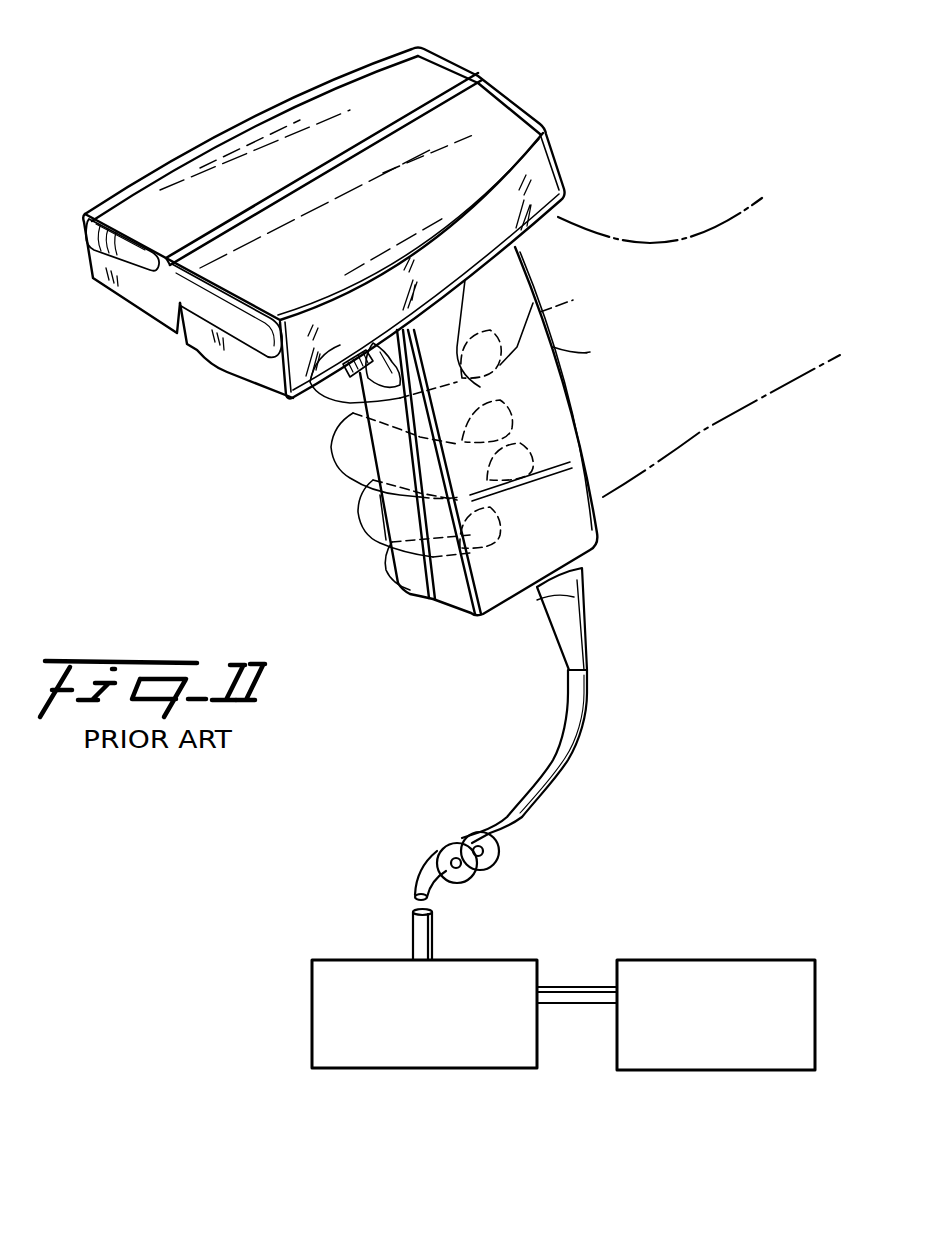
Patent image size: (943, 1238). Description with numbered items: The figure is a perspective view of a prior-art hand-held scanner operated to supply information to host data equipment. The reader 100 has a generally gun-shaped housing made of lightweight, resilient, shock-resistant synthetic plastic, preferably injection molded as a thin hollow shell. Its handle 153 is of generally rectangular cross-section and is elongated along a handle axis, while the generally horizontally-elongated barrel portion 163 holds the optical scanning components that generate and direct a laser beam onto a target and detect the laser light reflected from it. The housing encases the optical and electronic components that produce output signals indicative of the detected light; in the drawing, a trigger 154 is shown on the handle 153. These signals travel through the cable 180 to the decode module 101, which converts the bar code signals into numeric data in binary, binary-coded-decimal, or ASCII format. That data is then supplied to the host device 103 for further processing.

The reader 100 is at (545, 100).
The barrel portion 163 is at (501, 88).
The trigger 154 is at (372, 372).
The handle 153 is at (608, 538).
The cable 180 is at (572, 735).
The decode module 101 is at (493, 982).
The host device 103 is at (775, 975).